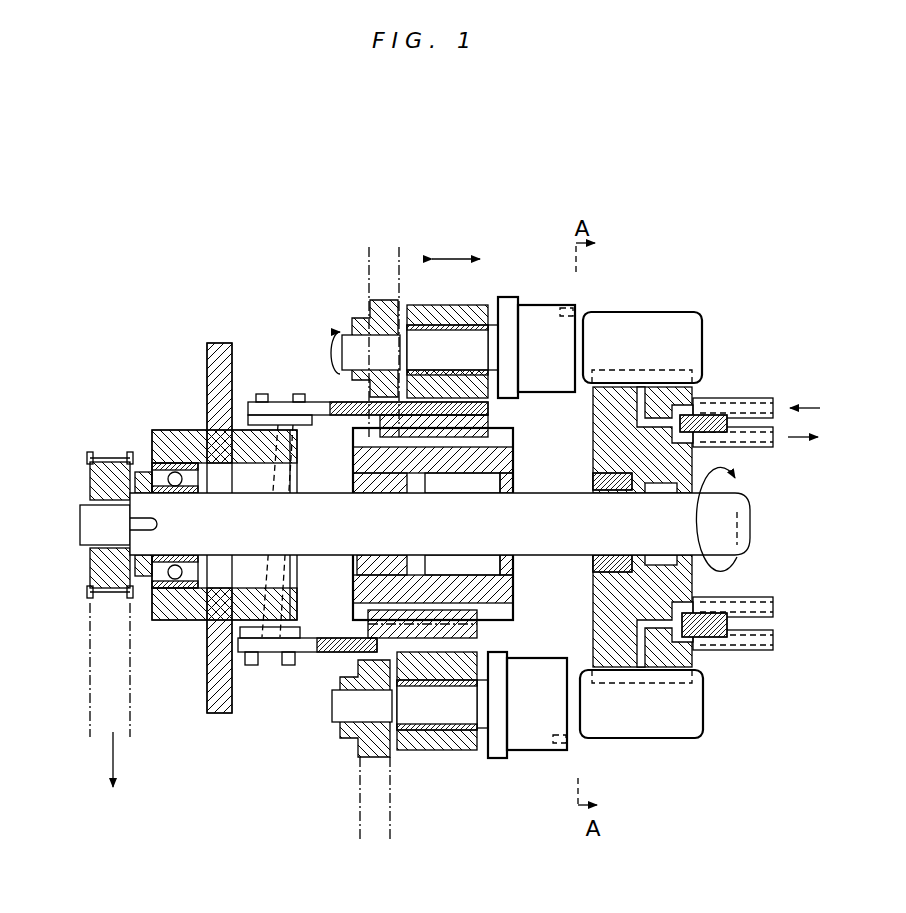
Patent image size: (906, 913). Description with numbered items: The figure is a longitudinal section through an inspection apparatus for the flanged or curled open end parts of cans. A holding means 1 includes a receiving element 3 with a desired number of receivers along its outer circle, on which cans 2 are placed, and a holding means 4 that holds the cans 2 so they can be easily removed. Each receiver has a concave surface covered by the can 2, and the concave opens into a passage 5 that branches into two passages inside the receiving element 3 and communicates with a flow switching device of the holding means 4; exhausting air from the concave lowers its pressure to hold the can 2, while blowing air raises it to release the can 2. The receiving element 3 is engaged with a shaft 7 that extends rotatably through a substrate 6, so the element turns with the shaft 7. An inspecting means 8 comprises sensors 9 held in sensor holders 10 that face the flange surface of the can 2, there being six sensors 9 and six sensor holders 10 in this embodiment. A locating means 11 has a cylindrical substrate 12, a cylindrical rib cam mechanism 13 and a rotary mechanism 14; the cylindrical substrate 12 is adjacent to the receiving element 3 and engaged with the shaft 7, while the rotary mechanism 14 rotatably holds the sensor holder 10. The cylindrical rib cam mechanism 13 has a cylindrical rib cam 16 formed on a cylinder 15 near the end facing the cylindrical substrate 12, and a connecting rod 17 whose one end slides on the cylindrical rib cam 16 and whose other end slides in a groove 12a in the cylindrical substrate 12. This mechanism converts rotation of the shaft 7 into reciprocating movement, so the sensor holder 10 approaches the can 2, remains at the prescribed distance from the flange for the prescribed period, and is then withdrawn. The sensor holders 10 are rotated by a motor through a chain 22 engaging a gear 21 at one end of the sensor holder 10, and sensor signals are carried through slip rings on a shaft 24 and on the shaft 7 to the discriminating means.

The holding means 1 is at (704, 481).
The can 2 is at (682, 315).
The receiving element 3 is at (698, 388).
The holding means 4 is at (752, 657).
The passage 5 is at (638, 415).
The substrate 6 is at (207, 690).
The shaft 7 is at (730, 512).
The inspecting means 8 is at (455, 445).
The sensor 9 is at (580, 312).
The sensor holder 10 is at (538, 302).
The locating means 11 is at (432, 770).
The cylindrical substrate 12 is at (512, 598).
The groove 12a is at (497, 437).
The cylindrical rib cam mechanism 13 is at (247, 258).
The rotary mechanism 14 is at (342, 742).
The cylinder 15 is at (178, 430).
The cylindrical rib cam 16 is at (262, 655).
The connecting rod 17 is at (262, 400).
The gear 21 is at (368, 323).
The chain 22 is at (382, 257).
The shaft 24 is at (353, 322).